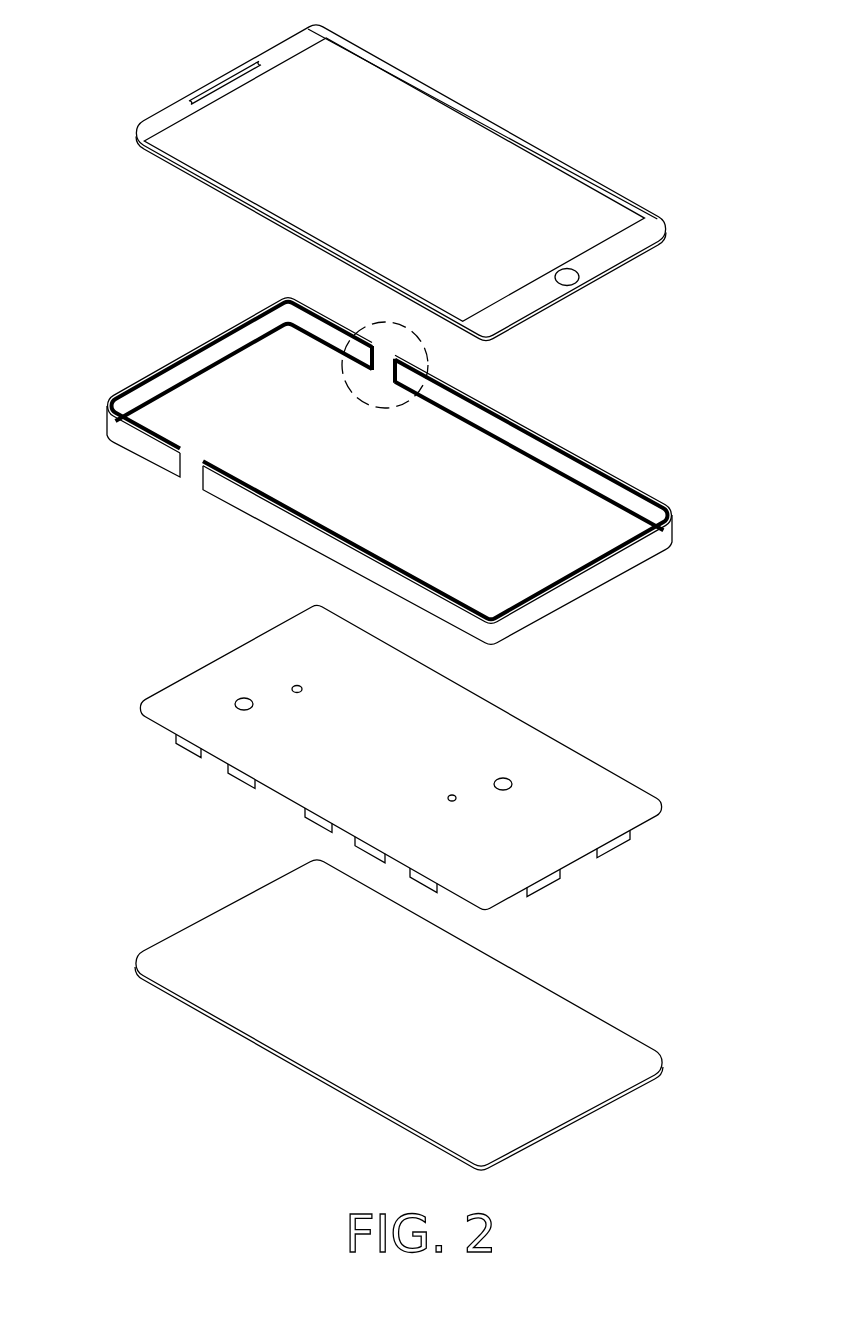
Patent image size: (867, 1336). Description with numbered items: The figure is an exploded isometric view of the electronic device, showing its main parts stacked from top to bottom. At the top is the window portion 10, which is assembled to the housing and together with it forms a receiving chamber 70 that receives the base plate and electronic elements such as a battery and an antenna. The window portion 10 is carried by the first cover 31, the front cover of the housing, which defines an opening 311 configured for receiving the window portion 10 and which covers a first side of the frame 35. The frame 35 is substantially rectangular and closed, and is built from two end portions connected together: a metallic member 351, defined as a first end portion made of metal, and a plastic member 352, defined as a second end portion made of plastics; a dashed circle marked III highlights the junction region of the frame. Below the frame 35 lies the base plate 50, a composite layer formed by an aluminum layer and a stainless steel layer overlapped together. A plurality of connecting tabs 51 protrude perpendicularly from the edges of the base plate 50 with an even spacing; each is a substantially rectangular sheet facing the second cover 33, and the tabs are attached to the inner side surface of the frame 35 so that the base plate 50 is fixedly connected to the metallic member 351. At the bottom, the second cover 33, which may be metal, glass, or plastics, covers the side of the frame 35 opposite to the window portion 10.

The window portion 10 is at (436, 182).
The first cover 31 is at (650, 233).
The opening 311 is at (622, 198).
The frame 35 is at (399, 471).
The metallic member 351 is at (650, 550).
The plastic member 352 is at (133, 440).
The receiving chamber 70 is at (583, 530).
The detail view region III is at (358, 393).
The base plate 50 is at (387, 757).
The connecting tabs 51 is at (190, 748).
The second cover 33 is at (587, 1027).